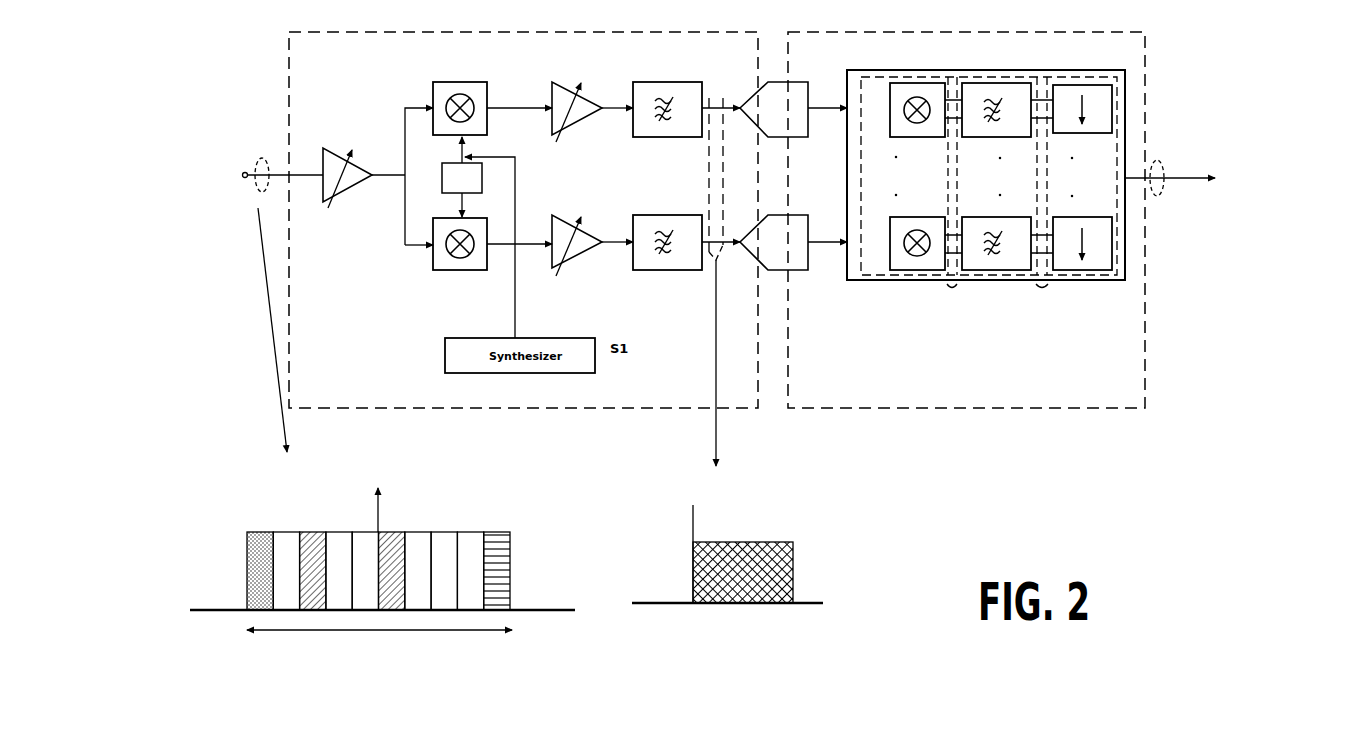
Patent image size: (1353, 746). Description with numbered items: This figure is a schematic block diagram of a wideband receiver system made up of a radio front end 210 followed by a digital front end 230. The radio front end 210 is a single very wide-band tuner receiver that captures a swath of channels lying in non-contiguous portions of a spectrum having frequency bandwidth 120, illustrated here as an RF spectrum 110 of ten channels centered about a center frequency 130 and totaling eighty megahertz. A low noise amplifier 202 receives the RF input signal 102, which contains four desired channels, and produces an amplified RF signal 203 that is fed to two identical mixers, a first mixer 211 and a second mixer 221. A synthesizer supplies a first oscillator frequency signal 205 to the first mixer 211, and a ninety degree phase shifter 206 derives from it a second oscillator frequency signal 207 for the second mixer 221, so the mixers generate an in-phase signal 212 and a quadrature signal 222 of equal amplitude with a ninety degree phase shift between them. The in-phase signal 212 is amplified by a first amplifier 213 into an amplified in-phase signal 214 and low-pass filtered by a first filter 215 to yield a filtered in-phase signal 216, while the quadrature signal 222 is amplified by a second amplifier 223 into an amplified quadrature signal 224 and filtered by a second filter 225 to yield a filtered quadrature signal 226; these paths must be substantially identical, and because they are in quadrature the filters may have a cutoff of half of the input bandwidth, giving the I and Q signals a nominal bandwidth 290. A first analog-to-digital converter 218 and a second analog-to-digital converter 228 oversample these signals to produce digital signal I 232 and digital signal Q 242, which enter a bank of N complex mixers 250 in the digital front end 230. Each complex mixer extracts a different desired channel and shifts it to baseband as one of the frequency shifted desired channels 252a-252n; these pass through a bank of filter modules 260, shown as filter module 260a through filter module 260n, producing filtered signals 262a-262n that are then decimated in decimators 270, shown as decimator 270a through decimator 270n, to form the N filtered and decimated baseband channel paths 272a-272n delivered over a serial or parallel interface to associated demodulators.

The RF input signal 102 is at (258, 192).
The RF input spectrum with channels 110 is at (291, 503).
The frequency bandwidth BW1 120 is at (470, 637).
The RF center frequency frfc 130 is at (398, 469).
The low noise amplifier LNA 202 is at (347, 184).
The amplified RF signal 203 is at (402, 176).
The first oscillator frequency signal 205 is at (490, 237).
The 90 degree phase shifter P1 206 is at (472, 186).
The second oscillator frequency signal 207 is at (480, 205).
The radio front end 210 is at (523, 220).
The mixer M1 211 is at (449, 100).
The in-phase signal 212 is at (519, 97).
The amplifier V1 213 is at (577, 117).
The amplified in-phase signal 214 is at (615, 97).
The filter F1 215 is at (667, 112).
The filtered in-phase signal 216 is at (721, 276).
The analog-to-digital converter ADC1 218 is at (774, 118).
The mixer M2 221 is at (449, 253).
The quadrature signal 222 is at (519, 234).
The amplifier V2 223 is at (577, 251).
The amplified quadrature signal 224 is at (615, 231).
The filter F2 225 is at (667, 247).
The filtered quadrature signal 226 is at (721, 232).
The analog-to-digital converter ADC2 228 is at (774, 234).
The digital front end 230 is at (966, 220).
The digital signal I 232 is at (827, 108).
The digital signal Q 242 is at (827, 244).
The bank of N complex mixers 250 is at (873, 190).
The frequency shifted desired channels 252a-252n is at (952, 291).
The filter modules 260 is at (973, 193).
The filter module 260a is at (997, 122).
The filter module 260n is at (997, 235).
The filtered signals 262a-262n is at (1042, 291).
The decimators 270 is at (1058, 190).
The decimator 270a is at (1083, 123).
The decimator 270n is at (1084, 235).
The signal paths 272a-272n is at (1157, 197).
The nominal bandwidth 290 is at (770, 573).